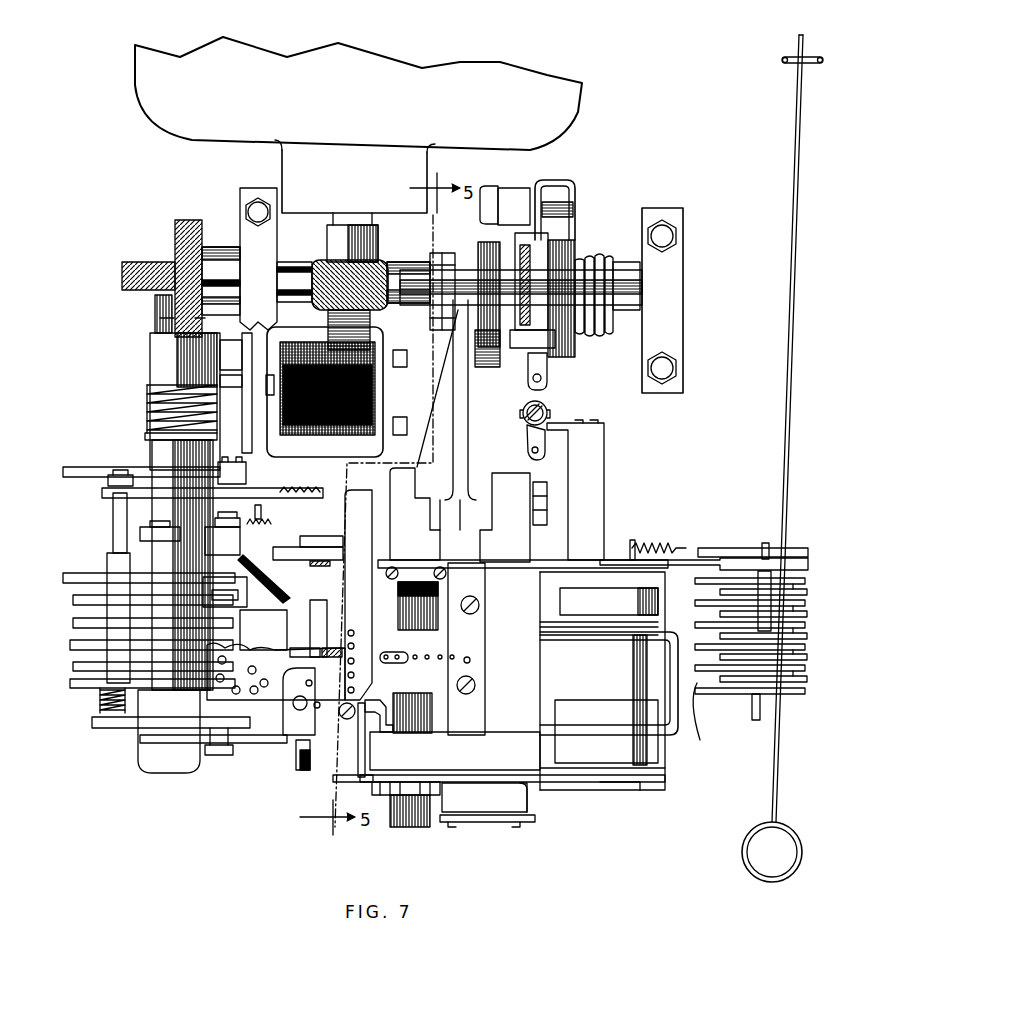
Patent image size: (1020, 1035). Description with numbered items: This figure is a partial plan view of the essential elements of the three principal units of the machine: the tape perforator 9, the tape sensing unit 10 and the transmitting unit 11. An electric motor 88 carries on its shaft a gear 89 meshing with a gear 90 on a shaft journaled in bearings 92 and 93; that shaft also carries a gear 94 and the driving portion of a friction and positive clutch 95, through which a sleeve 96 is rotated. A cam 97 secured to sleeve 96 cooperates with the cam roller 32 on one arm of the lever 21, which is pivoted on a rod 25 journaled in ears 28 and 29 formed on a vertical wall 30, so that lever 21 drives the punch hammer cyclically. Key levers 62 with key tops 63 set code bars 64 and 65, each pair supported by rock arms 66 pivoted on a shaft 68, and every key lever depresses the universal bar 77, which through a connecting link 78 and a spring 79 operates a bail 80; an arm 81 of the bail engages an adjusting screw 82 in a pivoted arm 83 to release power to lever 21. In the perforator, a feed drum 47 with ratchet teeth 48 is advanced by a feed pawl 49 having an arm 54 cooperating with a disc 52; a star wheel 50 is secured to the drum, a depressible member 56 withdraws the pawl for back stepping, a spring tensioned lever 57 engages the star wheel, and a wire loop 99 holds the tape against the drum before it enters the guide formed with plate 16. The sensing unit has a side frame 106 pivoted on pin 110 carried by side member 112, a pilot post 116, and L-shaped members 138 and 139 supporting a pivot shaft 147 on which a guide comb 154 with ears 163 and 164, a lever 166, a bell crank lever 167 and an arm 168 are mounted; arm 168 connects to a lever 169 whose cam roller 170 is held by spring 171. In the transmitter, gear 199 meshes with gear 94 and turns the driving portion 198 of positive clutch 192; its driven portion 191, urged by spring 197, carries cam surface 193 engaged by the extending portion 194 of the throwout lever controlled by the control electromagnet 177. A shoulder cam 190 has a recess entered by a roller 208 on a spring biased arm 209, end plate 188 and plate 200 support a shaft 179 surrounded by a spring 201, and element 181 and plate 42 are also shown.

The electric motor 88 is at (390, 58).
The bearing 92 is at (238, 232).
The gear 94 is at (180, 243).
The gear 199 is at (122, 276).
The driving portion of the clutch 198 is at (155, 306).
The positive clutch 192 is at (150, 327).
The driven portion of the clutch 191 is at (150, 345).
The extending portion of clutch throwout lever 194 is at (217, 363).
The cam surface 193 is at (230, 378).
The spring 197 is at (147, 410).
The gear 89 is at (322, 292).
The gear 90 is at (370, 323).
The control electromagnet 177 is at (300, 345).
The sleeve 96 is at (472, 262).
The cam 97 is at (492, 222).
The friction and positive clutch 95 is at (560, 258).
The cam roller 32 is at (490, 368).
The bearing 93 is at (683, 305).
The pivoted arm 83 is at (545, 370).
The arm of bail 81 is at (545, 423).
The adjusting screw 82 is at (540, 430).
The bail 80 is at (592, 452).
The lever 21 is at (470, 485).
The ear 28 is at (400, 500).
The ear 29 is at (525, 545).
The rod 25 is at (547, 503).
The shoulder or cam 190 is at (80, 470).
The roller 208 is at (240, 474).
The spring biased arm 209 is at (280, 505).
The plate 200 is at (102, 492).
The shaft 179 is at (113, 511).
The lever 169 is at (140, 531).
The cam roller 170 is at (135, 538).
The side member 112 is at (260, 524).
The L-shaped member 139 is at (248, 547).
The spring 171 is at (272, 525).
The side frame 106 is at (343, 556).
The guide comb 154 is at (320, 610).
The ear 164 is at (197, 578).
The bell crank lever 167 is at (110, 610).
The arm 168 is at (270, 590).
The lever 166 is at (262, 653).
The pivot pin 110 is at (318, 648).
The finger 181 is at (70, 682).
The spring 201 is at (90, 692).
The transmitting unit 11 is at (85, 705).
The end plate 188 is at (97, 722).
The ear 163 is at (200, 718).
The pivot shaft 147 is at (215, 728).
The L-shaped member 138 is at (245, 742).
The tape sensing unit 10 is at (281, 722).
The pilot post 116 is at (287, 738).
The plate 16 is at (365, 632).
The feed drum 47 is at (428, 613).
The plate 42 is at (486, 620).
The ratchet teeth 48 is at (425, 712).
The wire loop 99 is at (390, 655).
The feed pawl 49 is at (395, 708).
The tape perforator 9 is at (386, 732).
The disc 52 is at (481, 750).
The arm 54 is at (355, 778).
The star wheel 50 is at (432, 812).
The member 56 is at (515, 795).
The spring tensioned lever 57 is at (498, 822).
The vertical wall 30 is at (548, 590).
The spring 79 is at (655, 548).
The universal bar 77 is at (740, 548).
The connecting link 78 is at (700, 560).
The shaft 68 is at (766, 543).
The code bar 64 is at (703, 694).
The code bar 65 is at (700, 740).
The rock arm 66 is at (738, 697).
The key lever 62 is at (773, 770).
The key top 63 is at (752, 845).